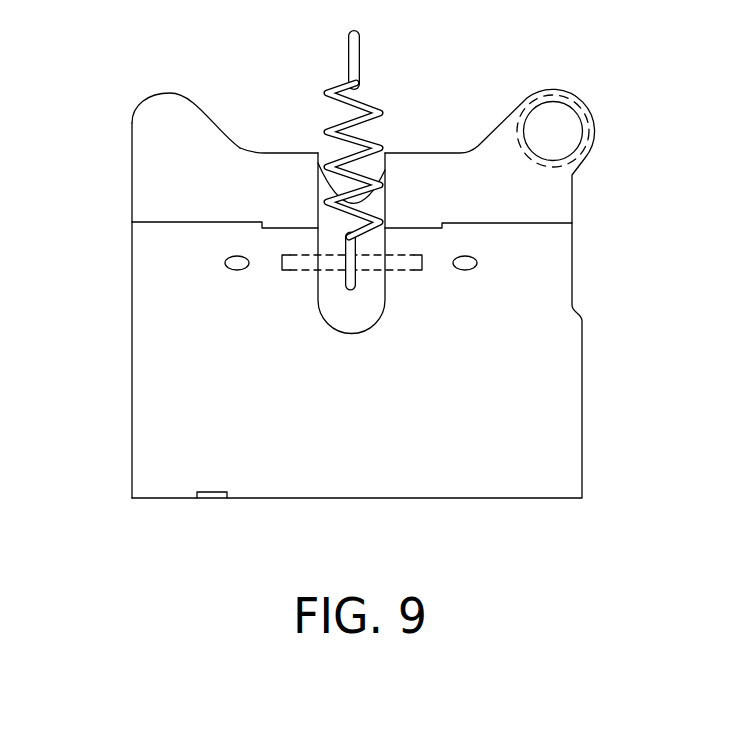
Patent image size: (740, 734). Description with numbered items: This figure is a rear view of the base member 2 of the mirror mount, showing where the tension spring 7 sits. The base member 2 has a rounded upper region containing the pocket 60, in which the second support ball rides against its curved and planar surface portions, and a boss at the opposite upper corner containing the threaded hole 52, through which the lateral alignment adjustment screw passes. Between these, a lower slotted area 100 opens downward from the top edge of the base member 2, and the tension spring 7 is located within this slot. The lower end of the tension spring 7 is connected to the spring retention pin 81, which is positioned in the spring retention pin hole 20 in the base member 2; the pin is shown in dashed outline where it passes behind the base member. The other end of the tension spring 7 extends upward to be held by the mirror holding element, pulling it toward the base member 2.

The base member 2 is at (573, 435).
The pocket 60 is at (165, 110).
The threaded hole 52 is at (578, 105).
The lower slotted area 100 is at (365, 306).
The spring retention pin hole 20 is at (225, 261).
The spring retention pin 81 is at (338, 263).
The tension spring 7 is at (362, 100).